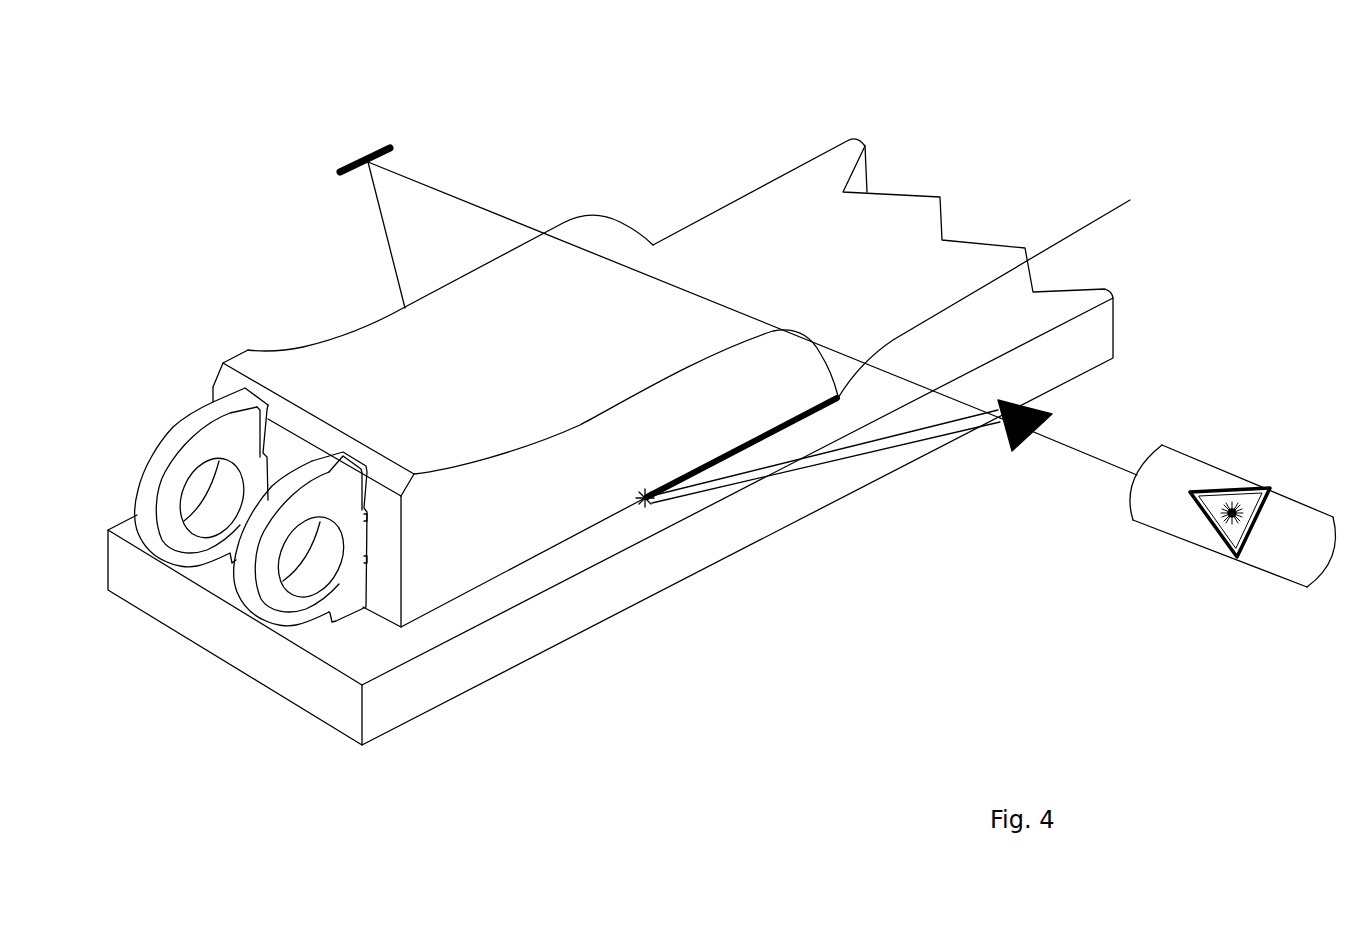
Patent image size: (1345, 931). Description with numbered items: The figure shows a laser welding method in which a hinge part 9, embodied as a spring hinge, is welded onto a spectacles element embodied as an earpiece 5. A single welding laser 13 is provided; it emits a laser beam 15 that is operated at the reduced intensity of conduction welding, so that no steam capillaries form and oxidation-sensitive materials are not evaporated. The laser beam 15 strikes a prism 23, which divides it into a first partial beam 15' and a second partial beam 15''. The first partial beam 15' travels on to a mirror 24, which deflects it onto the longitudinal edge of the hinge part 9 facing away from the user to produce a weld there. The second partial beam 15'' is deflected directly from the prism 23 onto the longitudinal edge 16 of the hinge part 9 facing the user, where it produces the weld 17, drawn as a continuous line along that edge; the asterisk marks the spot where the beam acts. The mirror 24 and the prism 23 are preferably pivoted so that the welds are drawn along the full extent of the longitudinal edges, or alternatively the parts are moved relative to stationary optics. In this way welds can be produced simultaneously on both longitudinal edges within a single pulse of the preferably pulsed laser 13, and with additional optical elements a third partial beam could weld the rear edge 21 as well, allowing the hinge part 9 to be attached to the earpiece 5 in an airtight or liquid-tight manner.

The earpiece 5 is at (555, 624).
The hinge part 9 is at (593, 162).
The welding laser 13 is at (1205, 460).
The laser beam 15 is at (1068, 466).
The first partial beam 15' is at (684, 281).
The second partial beam 15'' is at (823, 470).
The longitudinal edge 16 is at (590, 530).
The weld 17 is at (735, 455).
The rear edge 21 is at (1000, 293).
The prism 23 is at (1052, 412).
The mirror 24 is at (375, 145).